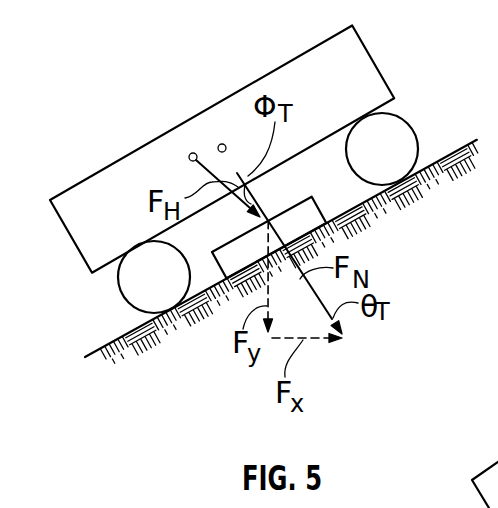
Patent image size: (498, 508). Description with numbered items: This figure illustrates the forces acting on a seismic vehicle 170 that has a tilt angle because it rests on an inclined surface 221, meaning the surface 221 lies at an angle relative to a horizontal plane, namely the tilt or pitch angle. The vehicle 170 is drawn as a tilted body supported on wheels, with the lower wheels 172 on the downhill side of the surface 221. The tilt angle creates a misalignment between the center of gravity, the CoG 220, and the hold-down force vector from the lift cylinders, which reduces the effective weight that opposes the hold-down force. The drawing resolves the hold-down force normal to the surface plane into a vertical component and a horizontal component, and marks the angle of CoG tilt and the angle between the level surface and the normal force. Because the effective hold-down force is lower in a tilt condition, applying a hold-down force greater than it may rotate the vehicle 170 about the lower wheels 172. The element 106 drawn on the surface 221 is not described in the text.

The vehicle 170 is at (332, 40).
The lower wheels 172 is at (118, 290).
The CoG 220 is at (193, 153).
The inclined surface 221 is at (463, 147).
The tongue weight sensor 106 is at (288, 204).